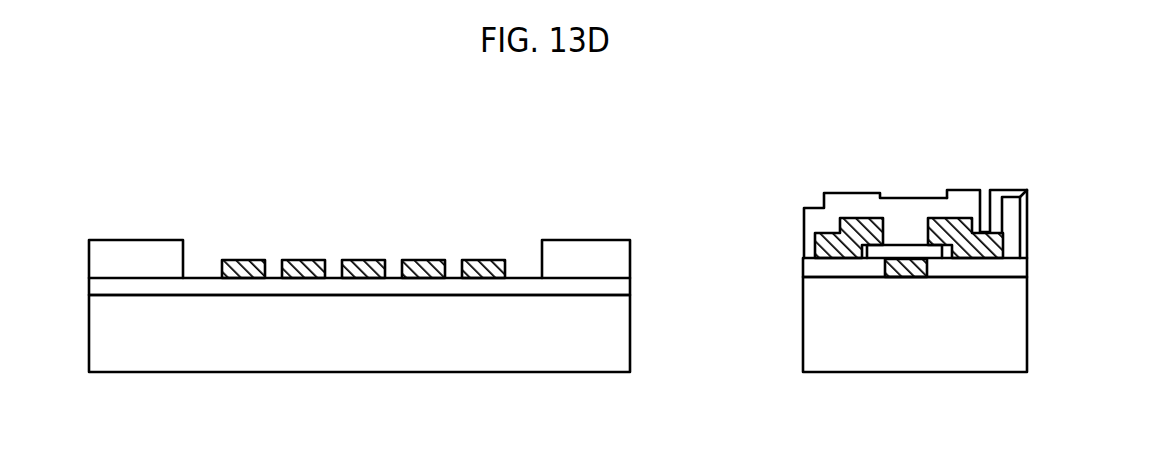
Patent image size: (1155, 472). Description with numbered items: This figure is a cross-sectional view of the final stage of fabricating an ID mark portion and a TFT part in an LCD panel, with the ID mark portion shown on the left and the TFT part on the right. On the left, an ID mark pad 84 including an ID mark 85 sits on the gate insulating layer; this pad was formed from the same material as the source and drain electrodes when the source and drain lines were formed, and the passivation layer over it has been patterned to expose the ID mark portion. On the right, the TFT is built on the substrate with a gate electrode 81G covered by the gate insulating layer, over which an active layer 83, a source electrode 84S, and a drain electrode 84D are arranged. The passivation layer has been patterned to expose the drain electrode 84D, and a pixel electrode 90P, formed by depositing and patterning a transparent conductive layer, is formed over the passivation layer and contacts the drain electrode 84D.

The ID mark pad 84 is at (222, 312).
The ID mark 85 is at (455, 267).
The gate electrode 81G is at (902, 278).
The active layer 83 is at (958, 258).
The source electrode 84S is at (842, 230).
The drain electrode 84D is at (953, 233).
The pixel electrode 90P is at (975, 195).